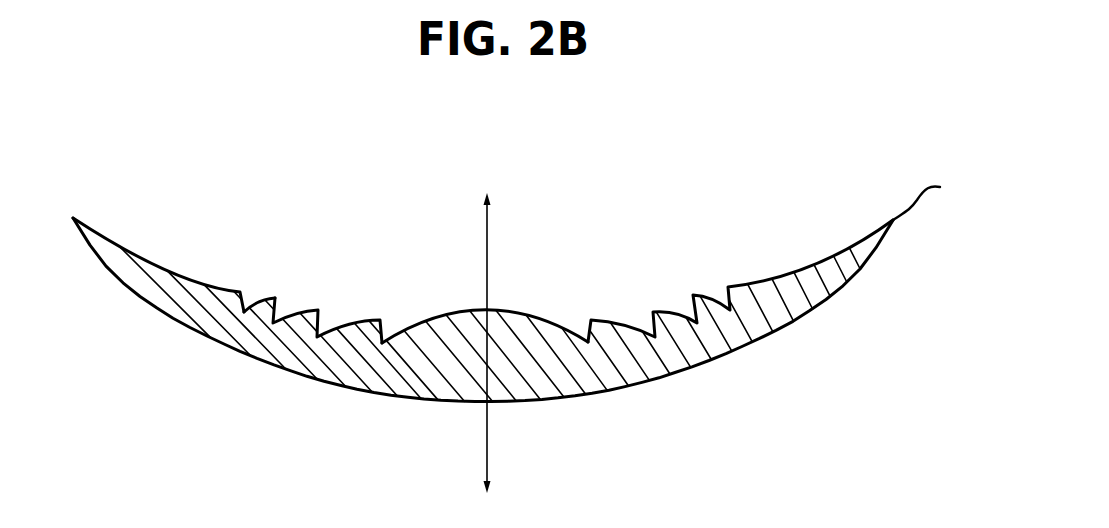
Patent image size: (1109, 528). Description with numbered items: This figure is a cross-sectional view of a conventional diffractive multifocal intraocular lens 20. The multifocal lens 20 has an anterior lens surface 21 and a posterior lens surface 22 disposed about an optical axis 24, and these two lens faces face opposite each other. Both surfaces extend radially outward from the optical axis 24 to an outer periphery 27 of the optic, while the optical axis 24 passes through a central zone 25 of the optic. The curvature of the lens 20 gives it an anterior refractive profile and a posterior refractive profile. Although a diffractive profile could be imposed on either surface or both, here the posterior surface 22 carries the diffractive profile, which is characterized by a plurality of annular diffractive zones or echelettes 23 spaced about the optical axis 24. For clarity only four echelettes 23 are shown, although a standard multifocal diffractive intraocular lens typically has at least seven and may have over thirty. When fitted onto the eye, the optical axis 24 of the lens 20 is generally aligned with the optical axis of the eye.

The multifocal lens 20 is at (834, 160).
The anterior lens surface 21 is at (146, 317).
The posterior lens surface 22 is at (146, 233).
The echelettes 23 is at (271, 284).
The optical axis 24 is at (502, 221).
The central zone 25 is at (425, 223).
The outer periphery 27 is at (935, 194).